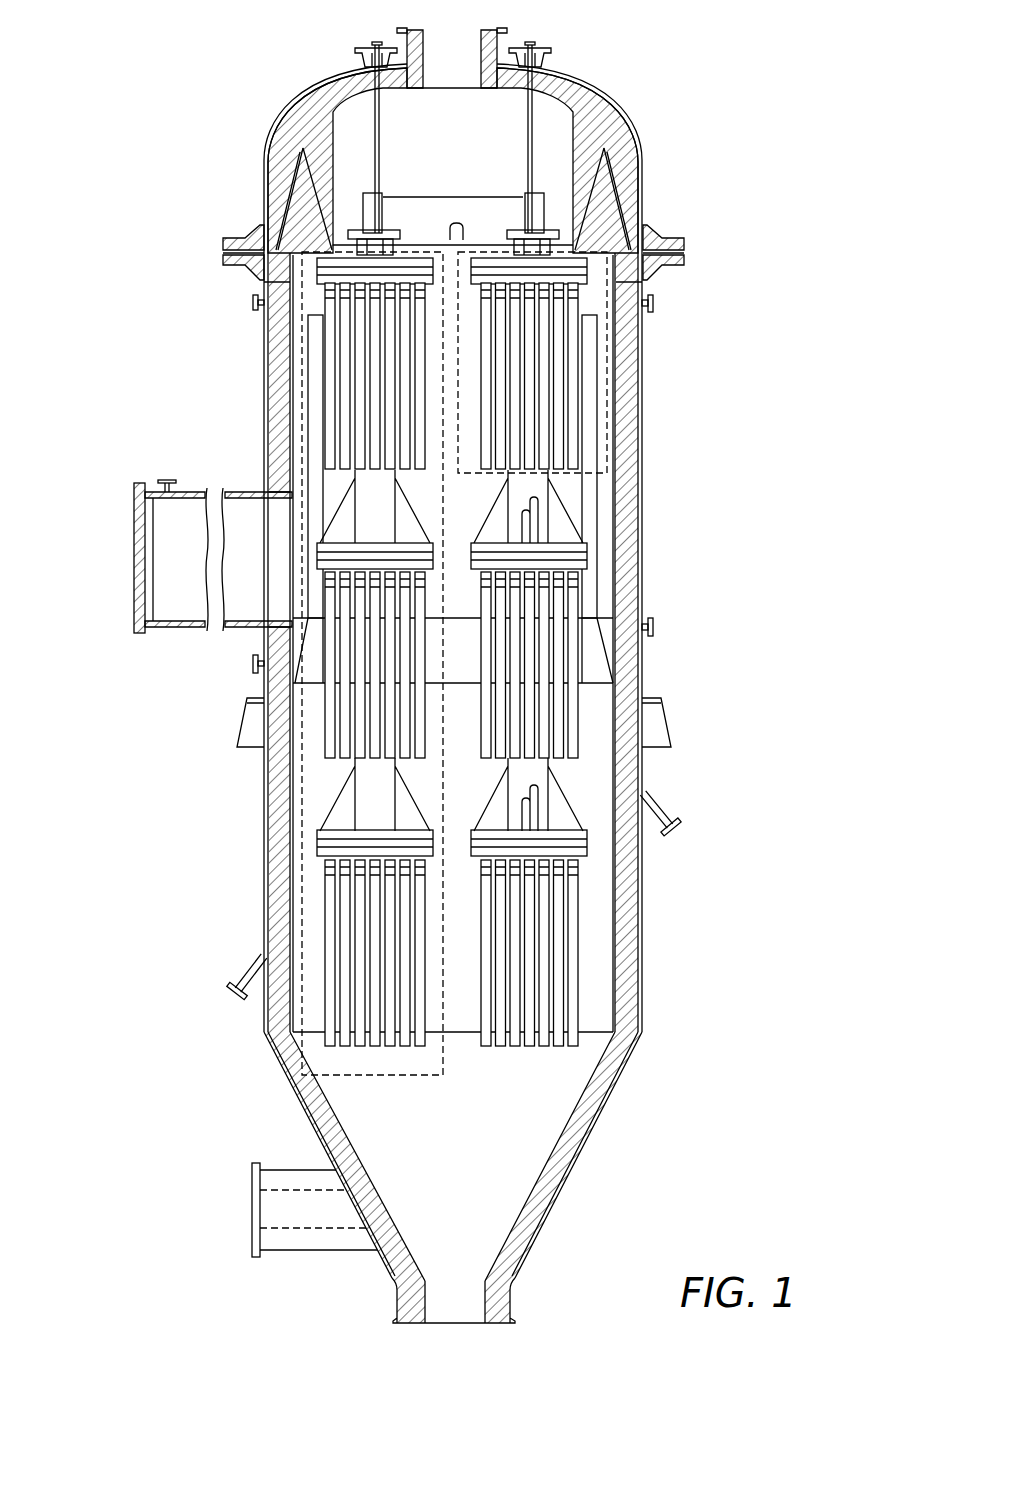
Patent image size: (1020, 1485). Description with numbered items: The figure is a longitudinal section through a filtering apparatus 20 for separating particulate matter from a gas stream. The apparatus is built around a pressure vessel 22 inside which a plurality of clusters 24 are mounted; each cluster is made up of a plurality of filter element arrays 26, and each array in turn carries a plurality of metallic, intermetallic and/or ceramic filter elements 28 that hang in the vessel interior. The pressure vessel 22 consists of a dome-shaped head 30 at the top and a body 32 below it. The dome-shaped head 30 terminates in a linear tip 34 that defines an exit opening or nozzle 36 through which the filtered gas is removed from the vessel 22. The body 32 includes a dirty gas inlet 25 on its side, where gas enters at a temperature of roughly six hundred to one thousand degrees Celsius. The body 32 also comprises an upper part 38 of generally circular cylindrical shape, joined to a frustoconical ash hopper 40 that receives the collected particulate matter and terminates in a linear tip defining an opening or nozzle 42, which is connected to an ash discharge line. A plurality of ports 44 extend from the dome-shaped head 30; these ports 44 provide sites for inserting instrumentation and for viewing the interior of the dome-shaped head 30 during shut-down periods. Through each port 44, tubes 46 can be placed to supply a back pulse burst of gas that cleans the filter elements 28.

The filtering apparatus 20 is at (700, 400).
The pressure vessel 22 is at (651, 586).
The clusters 24 is at (300, 403).
The dirty gas inlet 25 is at (134, 540).
The filter element arrays 26 is at (345, 368).
The filter elements 28 is at (332, 458).
The dome-shaped head 30 is at (631, 118).
The body 32 is at (645, 941).
The linear tip 34 is at (500, 40).
The exit opening or nozzle 36 is at (456, 36).
The upper part 38 is at (643, 523).
The frustoconical ash hopper 40 is at (562, 1190).
The opening or nozzle 42 is at (456, 1318).
The ports 44 is at (355, 60).
The tubes 46 is at (375, 42).